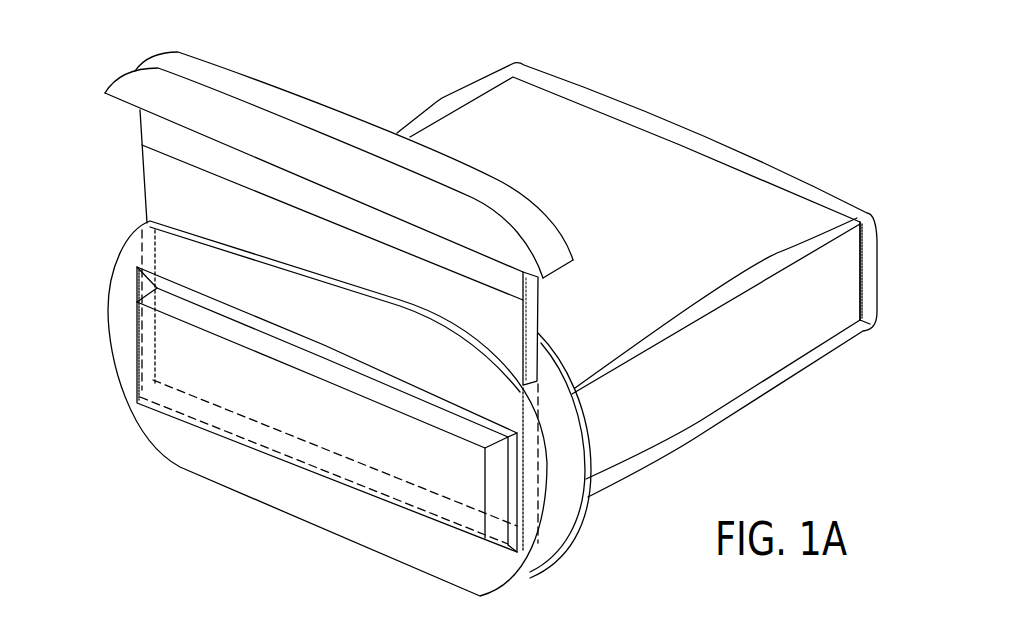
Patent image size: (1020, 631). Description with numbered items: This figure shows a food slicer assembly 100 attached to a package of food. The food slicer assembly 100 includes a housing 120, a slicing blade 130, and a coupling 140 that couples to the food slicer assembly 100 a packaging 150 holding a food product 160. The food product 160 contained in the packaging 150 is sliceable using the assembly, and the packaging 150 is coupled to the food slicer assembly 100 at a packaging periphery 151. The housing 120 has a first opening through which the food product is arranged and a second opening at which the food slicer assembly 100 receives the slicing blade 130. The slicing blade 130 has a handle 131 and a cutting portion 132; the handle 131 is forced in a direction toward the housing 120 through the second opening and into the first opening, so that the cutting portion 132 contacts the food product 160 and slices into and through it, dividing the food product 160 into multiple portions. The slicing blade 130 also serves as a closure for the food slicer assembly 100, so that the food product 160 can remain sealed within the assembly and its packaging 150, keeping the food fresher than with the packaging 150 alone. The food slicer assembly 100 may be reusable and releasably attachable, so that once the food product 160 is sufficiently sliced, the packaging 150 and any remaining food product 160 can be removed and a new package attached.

The food slicer assembly 100 is at (769, 94).
The housing 120 is at (117, 298).
The slicing blade 130 is at (152, 68).
The handle 131 is at (253, 82).
The cutting portion 132 is at (157, 178).
The coupling 140 is at (583, 505).
The packaging 150 is at (818, 184).
The packaging periphery 151 is at (593, 453).
The food product 160 is at (850, 283).